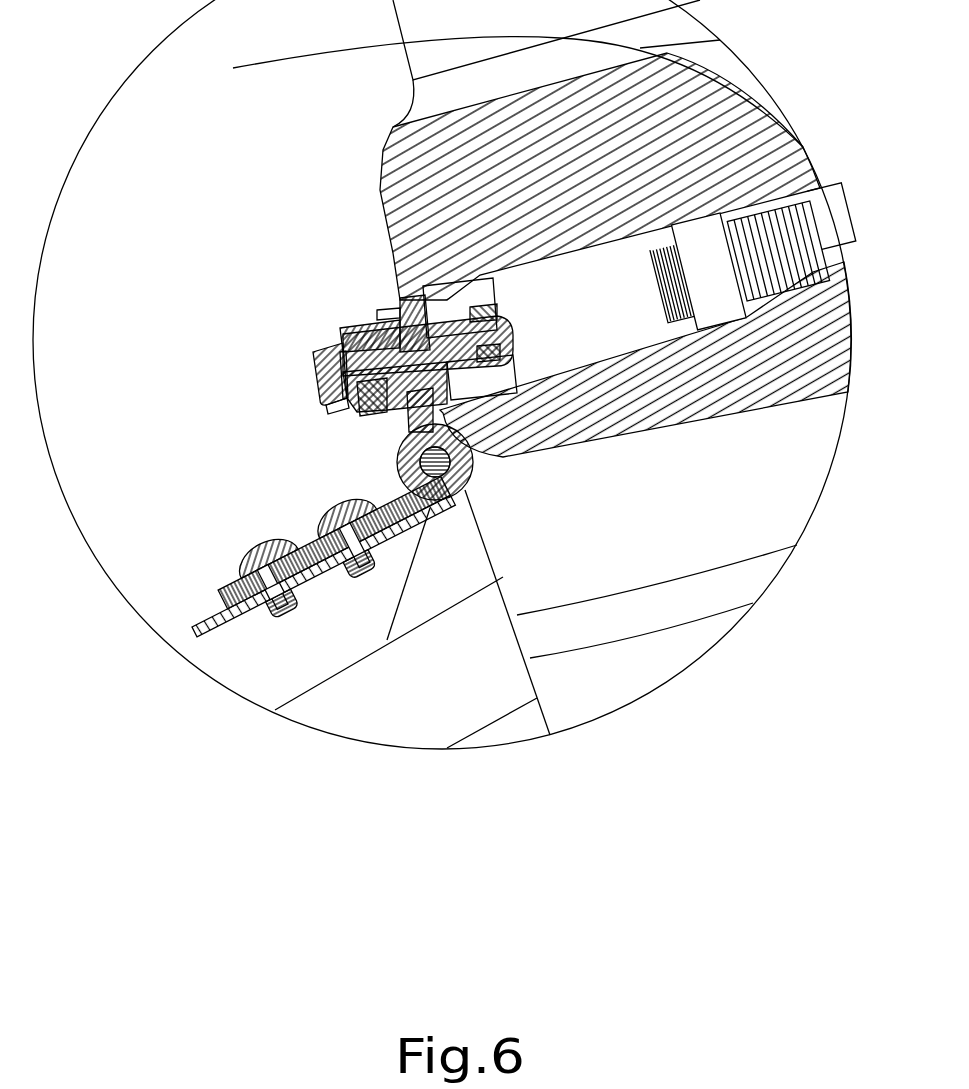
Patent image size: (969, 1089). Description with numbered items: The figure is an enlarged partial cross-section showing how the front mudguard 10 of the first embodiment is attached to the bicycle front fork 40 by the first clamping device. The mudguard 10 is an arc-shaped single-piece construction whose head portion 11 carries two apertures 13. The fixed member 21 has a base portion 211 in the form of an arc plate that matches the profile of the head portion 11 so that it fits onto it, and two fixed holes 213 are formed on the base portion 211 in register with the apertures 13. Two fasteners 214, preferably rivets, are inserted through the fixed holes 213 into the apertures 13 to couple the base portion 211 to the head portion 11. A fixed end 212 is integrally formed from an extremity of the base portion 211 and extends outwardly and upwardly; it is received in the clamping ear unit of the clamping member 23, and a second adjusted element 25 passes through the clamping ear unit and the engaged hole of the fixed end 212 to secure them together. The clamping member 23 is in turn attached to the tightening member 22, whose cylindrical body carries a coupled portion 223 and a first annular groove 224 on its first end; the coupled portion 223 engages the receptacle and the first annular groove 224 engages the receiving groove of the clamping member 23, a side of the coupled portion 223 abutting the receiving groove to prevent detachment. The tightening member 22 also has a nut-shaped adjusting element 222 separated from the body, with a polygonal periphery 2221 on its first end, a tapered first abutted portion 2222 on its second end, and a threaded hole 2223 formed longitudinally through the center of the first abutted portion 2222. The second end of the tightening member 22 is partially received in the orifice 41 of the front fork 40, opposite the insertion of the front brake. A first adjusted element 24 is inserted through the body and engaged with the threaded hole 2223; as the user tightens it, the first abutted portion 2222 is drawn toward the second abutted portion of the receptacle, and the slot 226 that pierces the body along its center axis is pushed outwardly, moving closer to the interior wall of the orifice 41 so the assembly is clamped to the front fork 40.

The front mudguard 10 is at (226, 655).
The head portion 11 is at (398, 537).
The apertures 13 is at (267, 612).
The fixed member 21 is at (246, 608).
The base portion 211 is at (312, 548).
The fixed end 212 is at (403, 452).
The fixed holes 213 is at (272, 560).
The fasteners 214 is at (250, 572).
The tightening member 22 is at (326, 330).
The adjusting element 222 is at (291, 347).
The polygonal periphery 2221 is at (340, 332).
The first abutted portion 2222 is at (316, 358).
The threaded hole 2223 is at (378, 313).
The coupled portion 223 is at (322, 406).
The first annular groove 224 is at (398, 290).
The slot 226 is at (450, 298).
The clamping member 23 is at (332, 420).
The first adjusted element 24 is at (323, 377).
The second adjusted element 25 is at (420, 468).
The front fork 40 is at (420, 187).
The orifice 41 is at (610, 335).